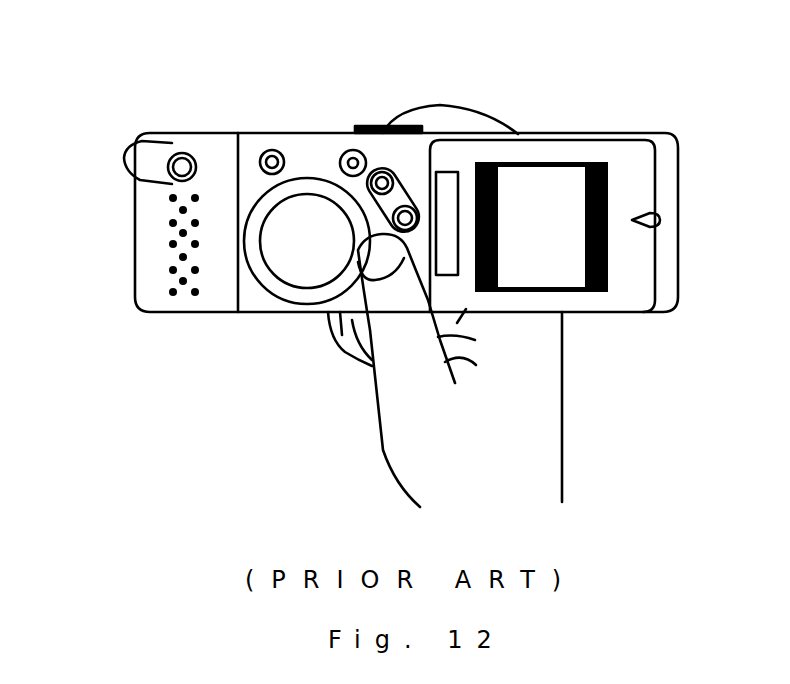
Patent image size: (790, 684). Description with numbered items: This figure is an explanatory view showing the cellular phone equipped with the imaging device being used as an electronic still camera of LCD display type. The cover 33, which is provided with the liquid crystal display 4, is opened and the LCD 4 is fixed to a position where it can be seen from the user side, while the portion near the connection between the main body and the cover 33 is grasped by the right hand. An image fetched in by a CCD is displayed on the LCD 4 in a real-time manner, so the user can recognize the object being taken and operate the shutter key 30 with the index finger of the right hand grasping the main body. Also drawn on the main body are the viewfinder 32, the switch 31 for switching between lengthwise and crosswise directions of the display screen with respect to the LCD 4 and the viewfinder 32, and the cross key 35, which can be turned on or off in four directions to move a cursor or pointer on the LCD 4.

The shutter key 30 is at (373, 127).
The switch 31 is at (133, 182).
The viewfinder 32 is at (178, 160).
The cover 33 is at (637, 135).
The liquid crystal display 4 is at (550, 163).
The cross key 35 is at (292, 282).